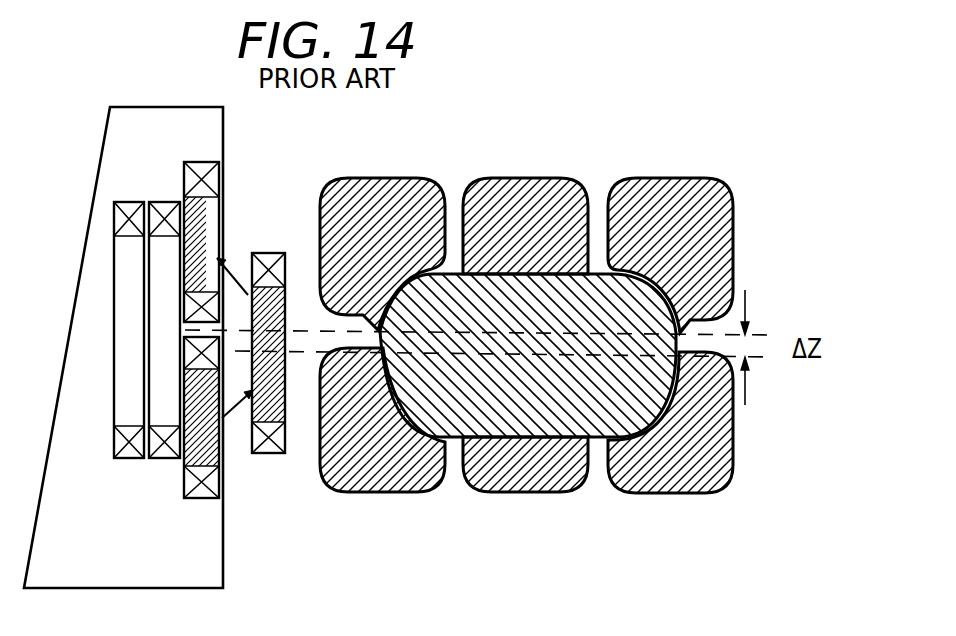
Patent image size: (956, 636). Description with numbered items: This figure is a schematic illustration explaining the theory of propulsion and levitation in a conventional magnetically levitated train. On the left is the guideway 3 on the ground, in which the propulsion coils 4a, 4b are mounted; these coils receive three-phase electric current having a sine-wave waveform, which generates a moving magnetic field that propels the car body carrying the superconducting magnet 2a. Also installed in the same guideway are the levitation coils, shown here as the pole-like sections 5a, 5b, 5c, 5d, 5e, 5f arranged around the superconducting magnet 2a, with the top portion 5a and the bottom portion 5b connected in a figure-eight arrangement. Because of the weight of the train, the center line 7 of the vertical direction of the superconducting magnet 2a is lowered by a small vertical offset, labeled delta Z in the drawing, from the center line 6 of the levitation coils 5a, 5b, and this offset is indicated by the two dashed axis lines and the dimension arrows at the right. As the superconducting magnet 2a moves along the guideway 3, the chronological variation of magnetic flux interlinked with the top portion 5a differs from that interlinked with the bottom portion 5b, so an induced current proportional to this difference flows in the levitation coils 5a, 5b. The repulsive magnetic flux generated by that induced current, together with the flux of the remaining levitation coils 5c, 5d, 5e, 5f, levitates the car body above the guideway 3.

The superconducting magnet 2a is at (268, 253).
The guideway 3 is at (104, 147).
The propulsion coil 4a is at (113, 257).
The propulsion coil 4b is at (162, 202).
The levitation coil top portion 5a is at (208, 161).
The levitation coil bottom portion 5b is at (215, 475).
The levitation coil 5c is at (515, 178).
The levitation coil 5d is at (518, 493).
The levitation coil 5e is at (652, 178).
The levitation coil 5f is at (645, 494).
The center line of the levitation coils 6 is at (757, 333).
The center line of the superconducting magnet 7 is at (755, 364).